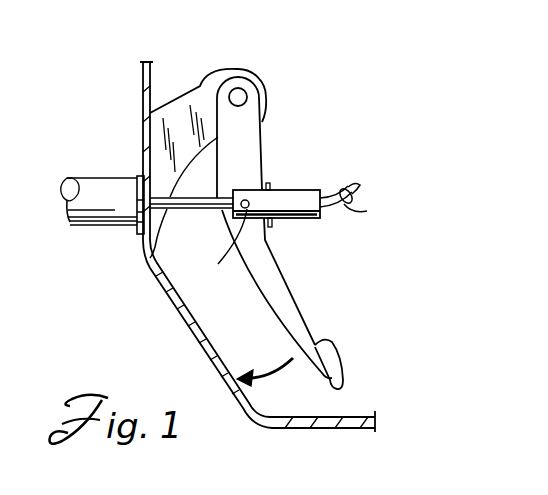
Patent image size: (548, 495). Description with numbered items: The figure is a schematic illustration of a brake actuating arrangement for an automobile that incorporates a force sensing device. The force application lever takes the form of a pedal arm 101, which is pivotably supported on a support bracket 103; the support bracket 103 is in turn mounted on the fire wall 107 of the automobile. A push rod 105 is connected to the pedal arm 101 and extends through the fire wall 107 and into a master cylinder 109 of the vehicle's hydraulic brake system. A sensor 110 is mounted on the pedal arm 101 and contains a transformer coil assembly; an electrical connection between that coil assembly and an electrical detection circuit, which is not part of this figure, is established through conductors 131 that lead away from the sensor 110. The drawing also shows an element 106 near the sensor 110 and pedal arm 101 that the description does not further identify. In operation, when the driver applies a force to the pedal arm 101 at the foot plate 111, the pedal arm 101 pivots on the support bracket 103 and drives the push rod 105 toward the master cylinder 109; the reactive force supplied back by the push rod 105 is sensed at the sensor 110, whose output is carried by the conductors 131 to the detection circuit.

The pedal arm 101 is at (262, 150).
The support bracket 103 is at (202, 82).
The push rod 105 is at (202, 210).
The cable 106 is at (224, 255).
The fire wall 107 is at (150, 80).
The master cylinder 109 is at (107, 177).
The sensor 110 is at (293, 189).
The foot plate 111 is at (322, 343).
The conductors 131 is at (360, 210).